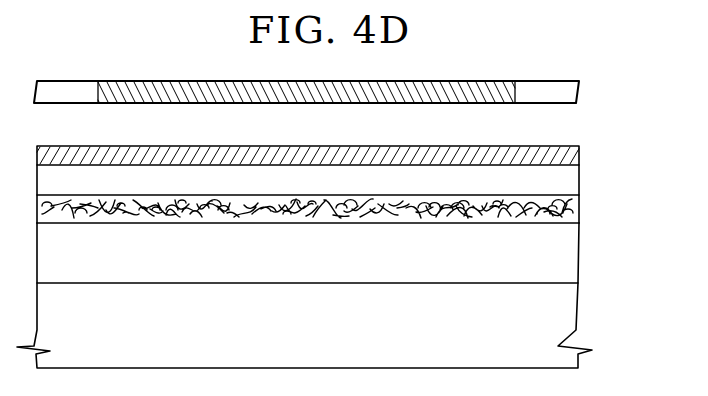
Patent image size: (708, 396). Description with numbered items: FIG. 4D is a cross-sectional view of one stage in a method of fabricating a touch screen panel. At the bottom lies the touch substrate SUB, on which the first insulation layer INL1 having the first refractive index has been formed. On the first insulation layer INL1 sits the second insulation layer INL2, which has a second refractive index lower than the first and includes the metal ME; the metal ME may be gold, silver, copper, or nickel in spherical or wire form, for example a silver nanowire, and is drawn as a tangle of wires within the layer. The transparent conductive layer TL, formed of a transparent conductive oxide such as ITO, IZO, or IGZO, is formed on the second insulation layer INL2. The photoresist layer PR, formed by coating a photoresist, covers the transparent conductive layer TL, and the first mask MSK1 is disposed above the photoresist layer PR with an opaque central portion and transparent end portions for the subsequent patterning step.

The first mask MSK1 is at (564, 92).
The photoresist layer PR is at (573, 150).
The transparent conductive layer TL is at (565, 178).
The second insulation layer INL2 is at (575, 208).
The metal ME is at (522, 223).
The first insulation layer INL1 is at (563, 254).
The touch substrate SUB is at (560, 315).